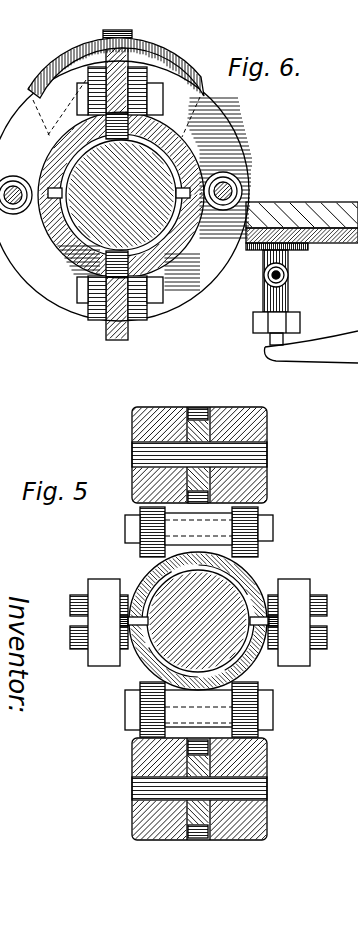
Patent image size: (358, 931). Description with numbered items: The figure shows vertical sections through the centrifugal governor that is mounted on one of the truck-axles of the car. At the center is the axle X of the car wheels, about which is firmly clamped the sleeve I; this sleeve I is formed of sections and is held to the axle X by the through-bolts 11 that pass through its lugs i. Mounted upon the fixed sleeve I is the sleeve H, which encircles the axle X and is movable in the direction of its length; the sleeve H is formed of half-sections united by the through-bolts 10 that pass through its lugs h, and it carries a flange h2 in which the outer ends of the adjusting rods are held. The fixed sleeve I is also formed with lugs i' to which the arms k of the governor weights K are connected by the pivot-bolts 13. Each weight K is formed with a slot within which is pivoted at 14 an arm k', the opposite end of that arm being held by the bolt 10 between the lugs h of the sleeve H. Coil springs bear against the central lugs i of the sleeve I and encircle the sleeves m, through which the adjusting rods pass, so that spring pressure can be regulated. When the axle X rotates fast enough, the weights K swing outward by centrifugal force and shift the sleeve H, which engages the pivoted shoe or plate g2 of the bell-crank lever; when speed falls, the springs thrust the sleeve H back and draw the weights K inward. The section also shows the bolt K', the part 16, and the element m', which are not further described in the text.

In FIG. 6, the clamping bolt K' is at (82, 205).
In FIG. 6, the pivoted shoe or plate g2 is at (176, 66).
In FIG. 6, the lugs h is at (78, 91).
In FIG. 6, the flange h2 is at (188, 268).
In FIG. 6, the through-bolts 10 is at (165, 289).
In FIG. 6, the hidden outline 16 is at (115, 113).
In FIG. 6, the sleeve H is at (196, 156).
In FIG. 6, the axle X is at (60, 257).
In FIG. 5, the axle X is at (262, 575).
In FIG. 6, the sleeve I is at (63, 222).
In FIG. 5, the sleeve I is at (147, 573).
In FIG. 6, the bolt m' is at (240, 184).
In FIG. 6, the sleeves m is at (16, 206).
In FIG. 5, the governor weights K is at (183, 612).
In FIG. 5, the arms k' is at (206, 609).
In FIG. 5, the pivot 14 is at (133, 455).
In FIG. 5, the lugs i' is at (199, 622).
In FIG. 5, the arms k is at (205, 633).
In FIG. 5, the pivot-bolts 13 is at (273, 527).
In FIG. 5, the through-bolts 11 is at (199, 622).
In FIG. 5, the lugs i is at (204, 622).